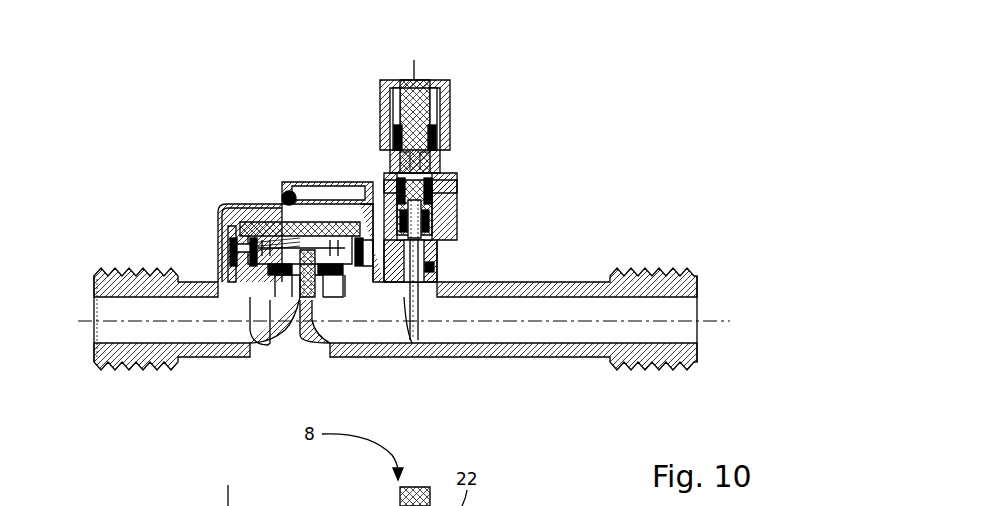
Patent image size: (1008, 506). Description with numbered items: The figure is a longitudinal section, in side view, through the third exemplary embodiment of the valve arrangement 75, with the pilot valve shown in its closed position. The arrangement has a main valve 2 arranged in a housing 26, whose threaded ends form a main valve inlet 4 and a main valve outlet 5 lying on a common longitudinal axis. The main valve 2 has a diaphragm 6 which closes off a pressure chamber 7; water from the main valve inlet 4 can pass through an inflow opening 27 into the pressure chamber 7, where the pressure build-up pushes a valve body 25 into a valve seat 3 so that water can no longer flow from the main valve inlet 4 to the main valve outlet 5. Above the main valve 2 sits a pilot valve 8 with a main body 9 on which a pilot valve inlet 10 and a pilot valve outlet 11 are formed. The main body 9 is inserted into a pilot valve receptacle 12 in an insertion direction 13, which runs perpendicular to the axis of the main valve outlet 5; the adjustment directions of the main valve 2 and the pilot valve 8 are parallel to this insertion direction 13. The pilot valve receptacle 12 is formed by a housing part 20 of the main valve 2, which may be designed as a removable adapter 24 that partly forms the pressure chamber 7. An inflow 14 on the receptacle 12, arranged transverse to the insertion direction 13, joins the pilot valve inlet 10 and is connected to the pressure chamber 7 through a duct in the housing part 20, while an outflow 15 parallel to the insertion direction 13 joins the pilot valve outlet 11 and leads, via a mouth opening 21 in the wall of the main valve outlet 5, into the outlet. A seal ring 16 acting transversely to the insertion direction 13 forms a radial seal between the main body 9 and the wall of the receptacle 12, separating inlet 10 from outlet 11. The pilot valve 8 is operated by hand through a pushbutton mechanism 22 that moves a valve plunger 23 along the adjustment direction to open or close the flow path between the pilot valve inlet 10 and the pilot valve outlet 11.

The main valve 2 is at (208, 240).
The valve seat 3 is at (248, 335).
The main valve inlet 4 is at (108, 312).
The main valve outlet 5 is at (488, 320).
The diaphragm 6 is at (340, 276).
The pressure chamber 7 is at (283, 197).
The pilot valve 8 is at (414, 62).
The main body 9 is at (444, 124).
The pilot valve inlet 10 is at (388, 190).
The pilot valve outlet 11 is at (440, 222).
The pilot valve receptacle 12 is at (457, 195).
The insertion direction 13 is at (233, 45).
The inflow 14 is at (340, 226).
The outflow 15 is at (406, 300).
The seal ring 16 is at (440, 268).
The housing part 20 is at (304, 182).
The mouth opening 21 is at (409, 275).
The pushbutton mechanism 22 is at (398, 131).
The valve plunger 23 is at (455, 184).
The adapter 24 is at (222, 222).
The valve body 25 is at (280, 272).
The housing 26 is at (200, 354).
The inflow opening 27 is at (222, 262).
The valve arrangement 75 is at (695, 172).